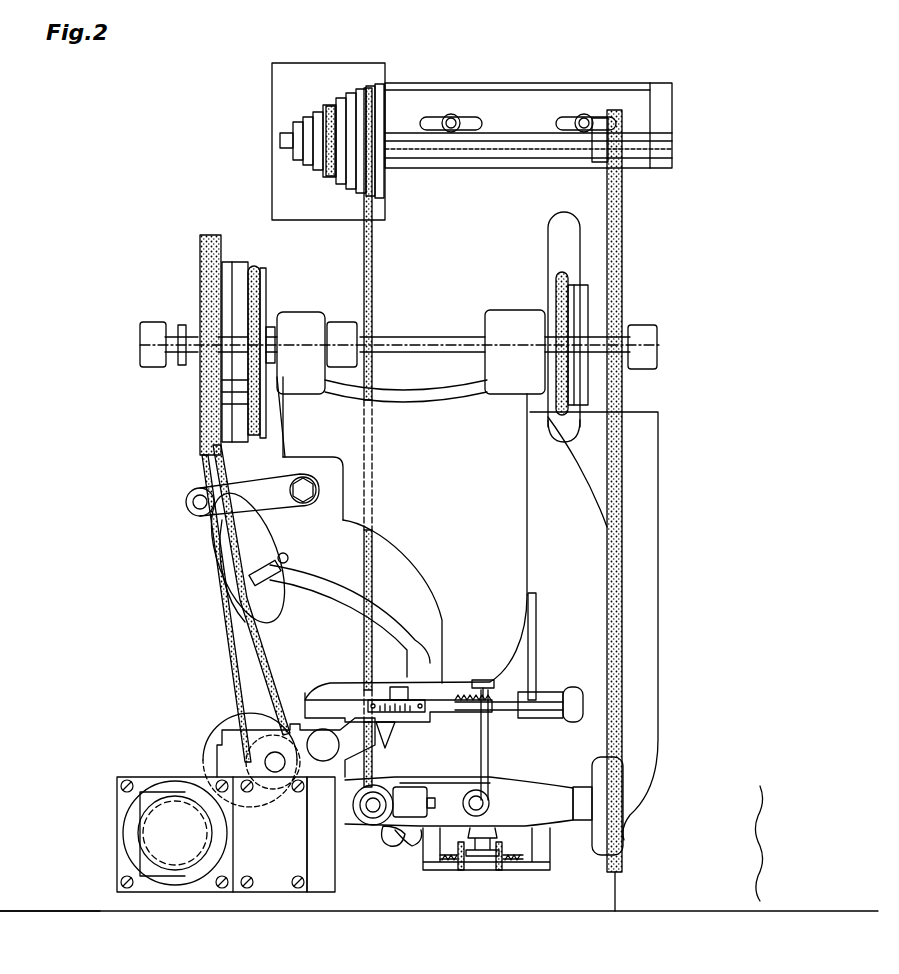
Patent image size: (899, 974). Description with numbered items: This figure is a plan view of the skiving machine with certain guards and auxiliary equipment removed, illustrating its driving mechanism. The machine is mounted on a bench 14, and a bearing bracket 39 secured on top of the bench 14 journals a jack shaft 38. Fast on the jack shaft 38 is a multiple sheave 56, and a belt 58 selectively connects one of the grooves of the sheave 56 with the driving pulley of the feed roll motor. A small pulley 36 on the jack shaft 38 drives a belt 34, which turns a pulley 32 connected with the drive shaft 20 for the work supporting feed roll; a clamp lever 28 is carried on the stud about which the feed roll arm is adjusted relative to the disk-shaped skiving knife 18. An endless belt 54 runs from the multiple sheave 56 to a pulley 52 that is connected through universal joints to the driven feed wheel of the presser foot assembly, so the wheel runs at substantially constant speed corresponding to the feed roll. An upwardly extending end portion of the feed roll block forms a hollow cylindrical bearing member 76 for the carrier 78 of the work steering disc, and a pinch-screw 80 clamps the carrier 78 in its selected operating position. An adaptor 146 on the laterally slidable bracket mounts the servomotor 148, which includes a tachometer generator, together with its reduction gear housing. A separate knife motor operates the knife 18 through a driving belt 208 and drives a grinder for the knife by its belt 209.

The bench 14 is at (50, 912).
The skiving knife 18 is at (215, 755).
The drive shaft 20 is at (580, 787).
The clamp lever 28 is at (478, 792).
The pulley 32 is at (624, 790).
The belt 34 is at (624, 388).
The small pulley 36 is at (606, 165).
The jack shaft 38 is at (490, 140).
The bearing bracket 39 is at (490, 92).
The pulley 52 is at (378, 795).
The endless belt 54 is at (362, 635).
The multiple sheave 56 is at (318, 170).
The belt 58 is at (330, 110).
The cylindrical bearing member 76 is at (420, 798).
The carrier 78 is at (413, 822).
The pinch-screw 80 is at (392, 848).
The adaptor 146 is at (305, 870).
The servomotor 148 is at (123, 860).
The driving belt 208 is at (246, 676).
The belt 209 is at (252, 275).